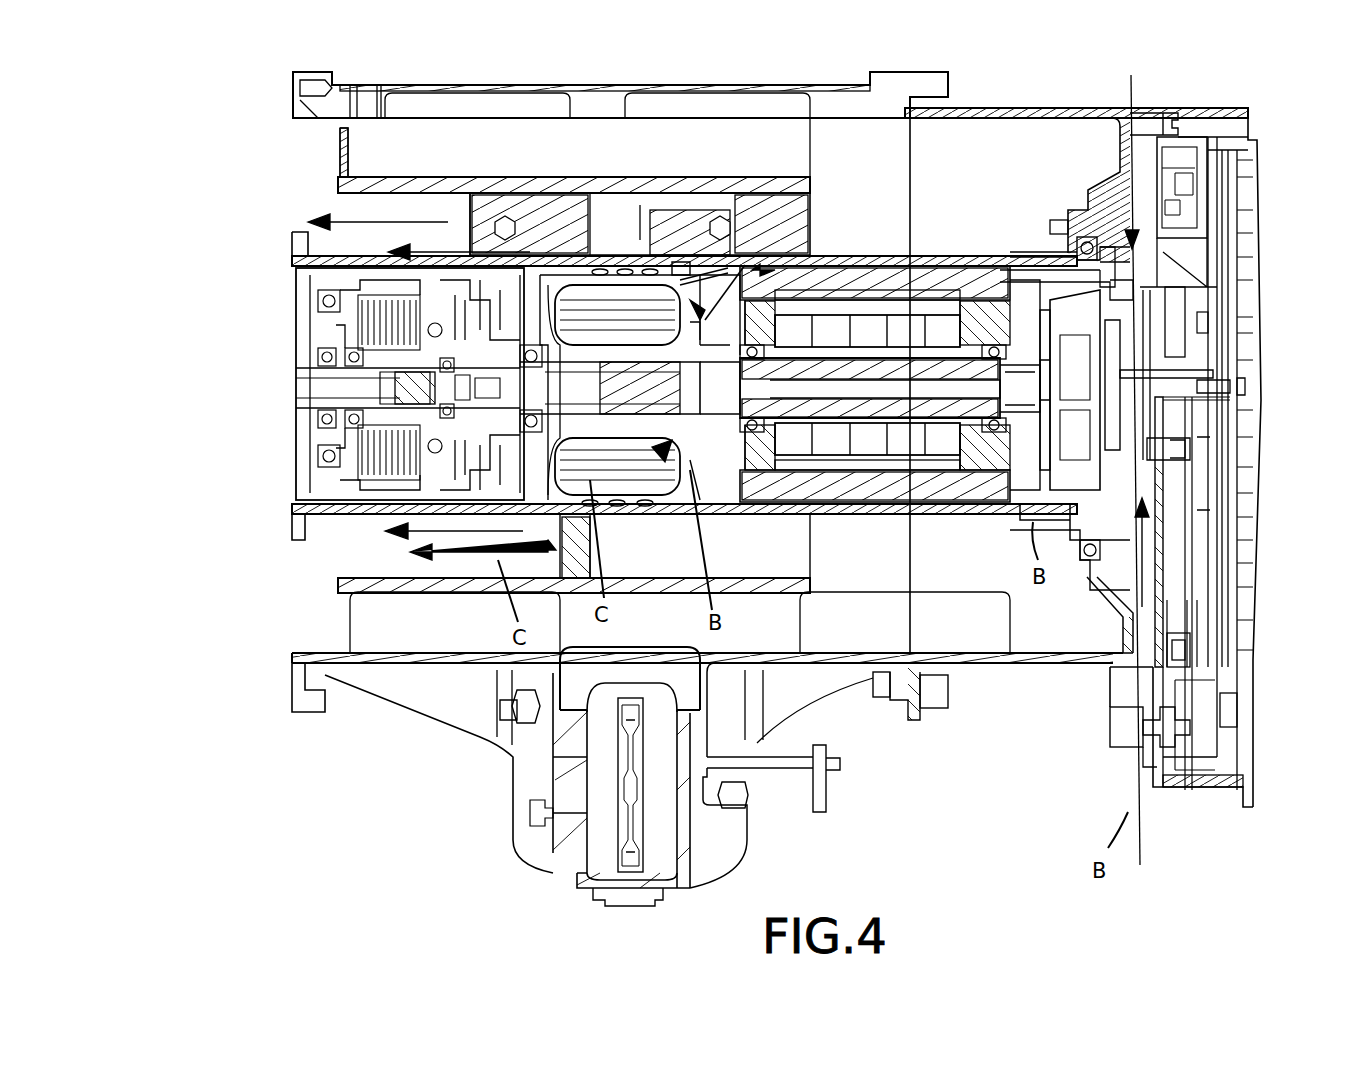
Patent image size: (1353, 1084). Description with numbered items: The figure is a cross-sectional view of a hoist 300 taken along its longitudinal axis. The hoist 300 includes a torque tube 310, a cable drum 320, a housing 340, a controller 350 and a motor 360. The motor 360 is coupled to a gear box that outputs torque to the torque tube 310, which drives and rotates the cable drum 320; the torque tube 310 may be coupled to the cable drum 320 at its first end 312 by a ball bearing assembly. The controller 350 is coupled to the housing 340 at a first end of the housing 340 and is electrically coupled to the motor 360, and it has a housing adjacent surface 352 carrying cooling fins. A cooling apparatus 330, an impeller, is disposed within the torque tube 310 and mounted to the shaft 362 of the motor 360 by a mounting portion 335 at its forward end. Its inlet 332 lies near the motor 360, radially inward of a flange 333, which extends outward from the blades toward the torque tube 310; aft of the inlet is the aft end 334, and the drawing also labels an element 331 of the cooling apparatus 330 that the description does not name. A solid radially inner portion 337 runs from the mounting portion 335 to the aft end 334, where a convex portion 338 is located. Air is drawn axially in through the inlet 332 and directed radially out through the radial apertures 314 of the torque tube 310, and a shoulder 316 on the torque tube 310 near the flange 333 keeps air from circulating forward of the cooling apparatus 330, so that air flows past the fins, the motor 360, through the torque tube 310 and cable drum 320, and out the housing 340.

The hoist 300 is at (190, 106).
The torque tube 310 is at (375, 262).
The first end of torque tube 312 is at (1077, 262).
The radial apertures 314 is at (595, 508).
The shoulder 316 is at (682, 268).
The cable drum 320 is at (385, 185).
The cooling apparatus 330 is at (665, 290).
The winding 331 is at (630, 330).
The inlet 332 is at (690, 320).
The flange 333 is at (700, 300).
The aft end 334 is at (560, 300).
The mounting portion 335 is at (652, 453).
The radially inner portion 337 is at (625, 425).
The convex portion 338 is at (570, 418).
The housing 340 is at (1128, 616).
The controller 350 is at (1195, 566).
The housing adjacent surface 352 is at (1155, 666).
The motor 360 is at (884, 478).
The shaft 362 is at (850, 405).